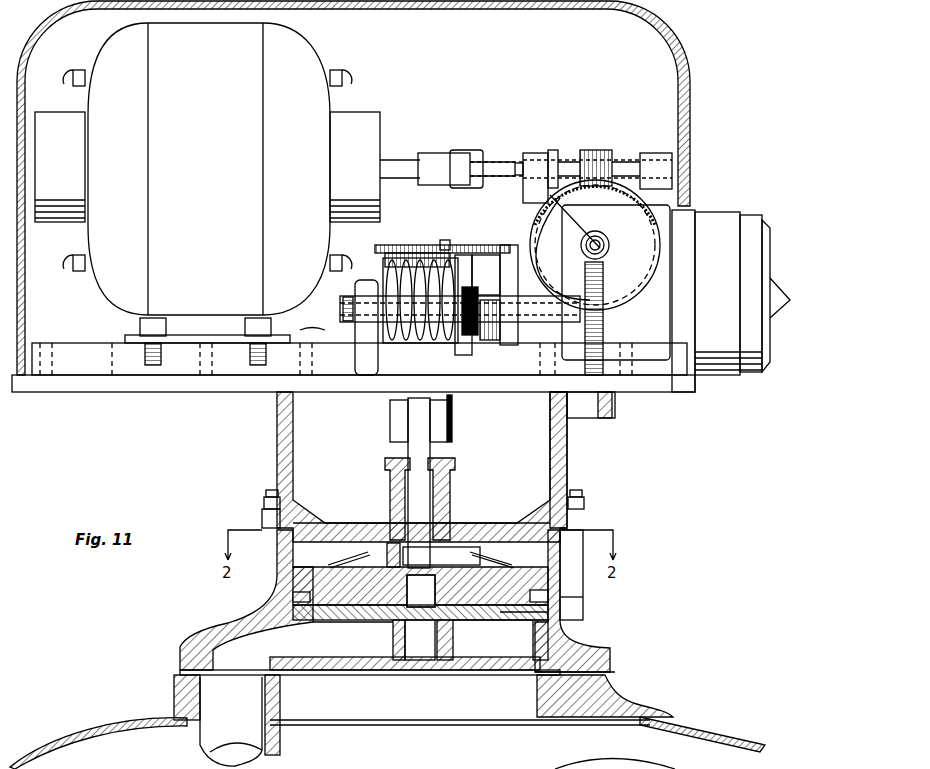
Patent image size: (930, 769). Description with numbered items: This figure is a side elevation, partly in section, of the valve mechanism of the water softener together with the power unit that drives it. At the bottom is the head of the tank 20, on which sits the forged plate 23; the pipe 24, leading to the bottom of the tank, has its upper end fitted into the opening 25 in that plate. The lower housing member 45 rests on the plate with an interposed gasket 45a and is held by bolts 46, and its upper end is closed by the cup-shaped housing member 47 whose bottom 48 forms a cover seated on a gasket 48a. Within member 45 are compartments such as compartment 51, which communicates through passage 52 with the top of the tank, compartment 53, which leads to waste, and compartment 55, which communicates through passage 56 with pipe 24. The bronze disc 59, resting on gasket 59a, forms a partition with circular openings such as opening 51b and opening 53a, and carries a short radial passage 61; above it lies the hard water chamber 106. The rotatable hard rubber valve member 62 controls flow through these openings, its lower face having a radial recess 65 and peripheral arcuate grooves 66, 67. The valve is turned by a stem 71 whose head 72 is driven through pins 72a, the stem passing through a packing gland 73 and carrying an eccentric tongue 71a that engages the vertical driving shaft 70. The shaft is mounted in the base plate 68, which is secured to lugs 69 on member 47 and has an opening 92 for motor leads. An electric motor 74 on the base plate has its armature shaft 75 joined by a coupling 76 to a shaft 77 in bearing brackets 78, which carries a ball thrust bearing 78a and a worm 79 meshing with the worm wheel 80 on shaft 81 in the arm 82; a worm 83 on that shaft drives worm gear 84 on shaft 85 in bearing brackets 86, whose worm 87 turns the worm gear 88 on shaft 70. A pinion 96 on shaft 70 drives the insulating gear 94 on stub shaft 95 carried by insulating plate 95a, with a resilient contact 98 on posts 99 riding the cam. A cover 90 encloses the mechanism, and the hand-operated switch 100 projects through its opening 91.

The tank 20 is at (700, 722).
The plate 23 is at (625, 692).
The pipe 24 is at (205, 748).
The opening 25 is at (178, 692).
The lower housing member 45 is at (577, 645).
The gasket 45a is at (607, 672).
The bolts 46 is at (270, 495).
The cup-shaped housing member 47 is at (567, 470).
The bottom 48 is at (538, 520).
The gasket 48a is at (280, 528).
The compartment 51 is at (503, 642).
The opening 51b is at (465, 636).
The passage 52 is at (500, 675).
The compartment 53 is at (420, 650).
The opening 53a is at (393, 635).
The compartment 55 is at (345, 650).
The passage 56 is at (252, 652).
The disc 59 is at (320, 620).
The gasket 59a is at (560, 614).
The radial passage 61 is at (535, 632).
The rotatable valve member 62 is at (315, 572).
The recess 65 is at (421, 591).
The arcuate groove 66 is at (548, 597).
The arcuate groove 67 is at (298, 597).
The base plate 68 is at (222, 385).
The lugs 69 is at (612, 405).
The driving shaft 70 is at (452, 418).
The stem 71 is at (408, 450).
The eccentric tongue 71a is at (406, 412).
The head 72 is at (468, 523).
The pins 72a is at (404, 556).
The packing gland 73 is at (390, 492).
The electric motor 74 is at (302, 46).
The armature shaft 75 is at (390, 160).
The coupling 76 is at (463, 153).
The shaft 77 is at (519, 163).
The bearing brackets 78 is at (538, 155).
The ball thrust bearing 78a is at (556, 160).
The worm 79 is at (602, 152).
The worm wheel 80 is at (630, 298).
The shaft 81 is at (598, 238).
The arm 82 is at (572, 235).
The worm 83 is at (610, 240).
The worm gear 84 is at (600, 302).
The shaft 85 is at (500, 322).
The bearing brackets 86 is at (330, 392).
The worm 87 is at (420, 343).
The worm gear 88 is at (345, 303).
The cover 90 is at (622, 8).
The opening 91 is at (688, 210).
The opening 92 is at (112, 380).
The gear 94 is at (380, 248).
The stub shaft 95 is at (446, 242).
The insulating plate 95a is at (320, 336).
The pinion 96 is at (400, 250).
The resilient contact 98 is at (488, 258).
The posts 99 is at (507, 247).
The four-way hand-operated switch 100 is at (725, 215).
The hard water chamber 106 is at (583, 565).